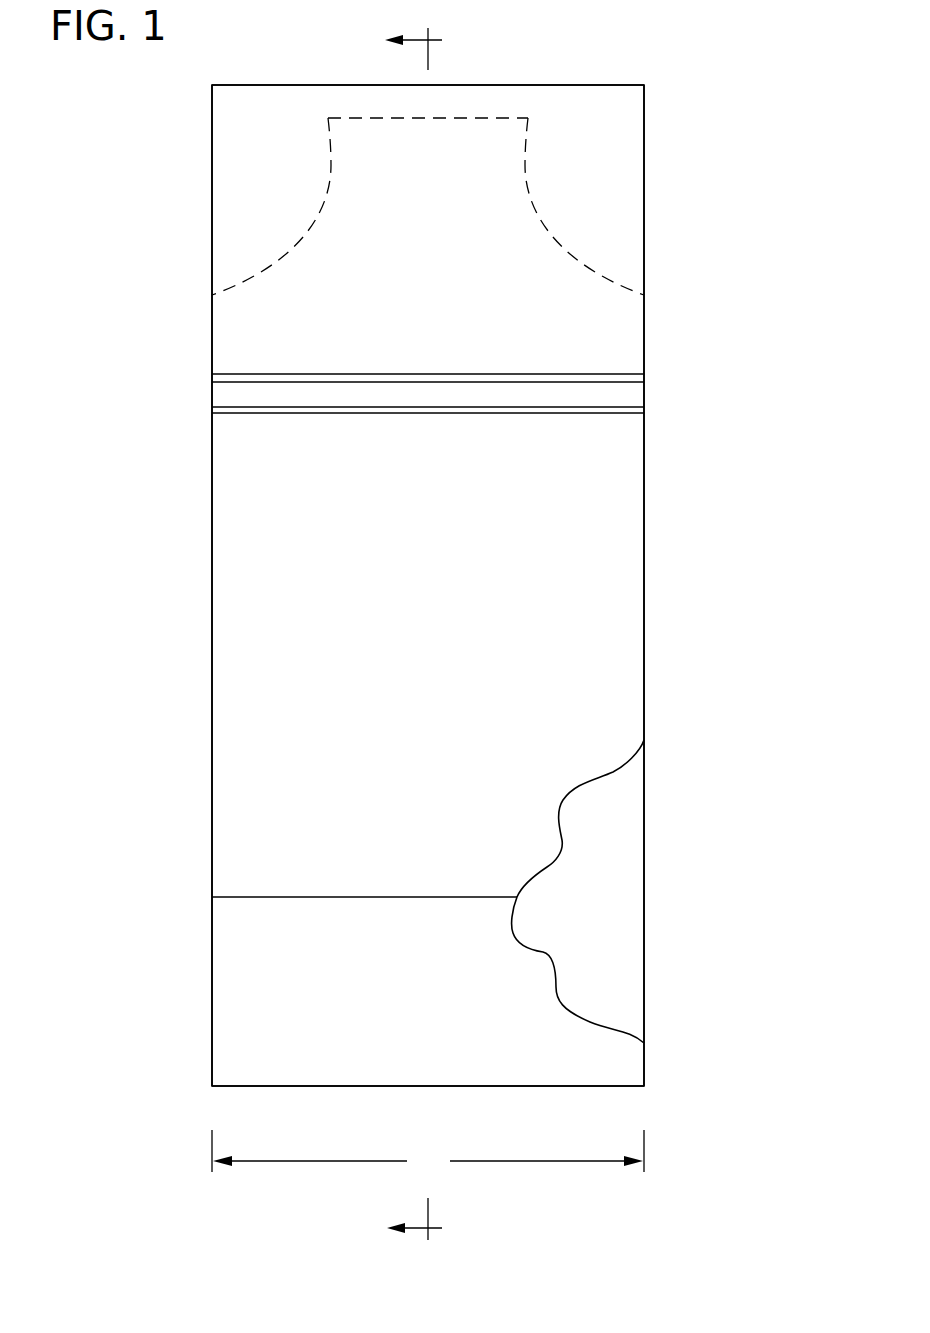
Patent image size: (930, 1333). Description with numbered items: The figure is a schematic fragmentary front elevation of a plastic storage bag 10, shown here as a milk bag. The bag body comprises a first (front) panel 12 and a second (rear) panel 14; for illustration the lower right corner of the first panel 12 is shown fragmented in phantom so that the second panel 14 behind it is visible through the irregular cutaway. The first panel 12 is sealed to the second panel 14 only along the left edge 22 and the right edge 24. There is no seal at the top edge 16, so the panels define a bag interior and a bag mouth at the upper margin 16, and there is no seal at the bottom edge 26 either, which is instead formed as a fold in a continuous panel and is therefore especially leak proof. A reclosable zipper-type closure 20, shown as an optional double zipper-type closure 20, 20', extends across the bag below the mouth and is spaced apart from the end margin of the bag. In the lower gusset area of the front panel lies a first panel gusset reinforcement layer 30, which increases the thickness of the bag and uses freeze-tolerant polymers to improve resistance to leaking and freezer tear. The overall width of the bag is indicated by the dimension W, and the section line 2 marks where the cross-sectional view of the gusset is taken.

The bag 10 is at (78, 1062).
The first panel 12 is at (608, 667).
The second panel 14 is at (596, 905).
The top edge 16 is at (493, 85).
The reclosable zipper-type closure 20 is at (428, 346).
The double zipper-type closure 20' is at (464, 421).
The left edge 22 is at (212, 838).
The right edge 24 is at (644, 571).
The bottom edge 26 is at (352, 1087).
The first panel gusset reinforcement layer 30 is at (243, 945).
The width W is at (428, 1154).
The section line 2- 2 is at (418, 637).